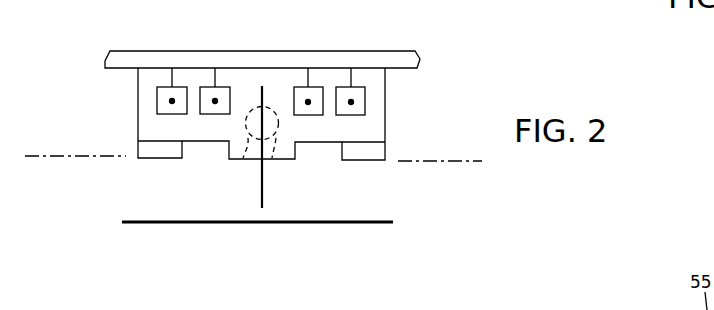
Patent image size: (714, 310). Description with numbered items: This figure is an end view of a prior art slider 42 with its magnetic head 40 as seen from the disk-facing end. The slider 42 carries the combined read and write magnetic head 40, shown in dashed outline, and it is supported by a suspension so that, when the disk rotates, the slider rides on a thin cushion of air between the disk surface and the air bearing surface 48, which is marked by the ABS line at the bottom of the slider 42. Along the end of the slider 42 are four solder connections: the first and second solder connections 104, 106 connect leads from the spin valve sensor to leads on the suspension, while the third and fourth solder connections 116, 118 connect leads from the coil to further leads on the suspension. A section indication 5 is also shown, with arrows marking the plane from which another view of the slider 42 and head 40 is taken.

The slider 42 is at (138, 98).
The first solder connection 104 is at (157, 90).
The third solder connection 116 is at (202, 90).
The fourth solder connection 118 is at (295, 90).
The second solder connection 106 is at (338, 90).
The magnetic head 40 is at (243, 165).
The air bearing surface 48 is at (52, 158).
The section line for FIG. 5 is at (144, 236).